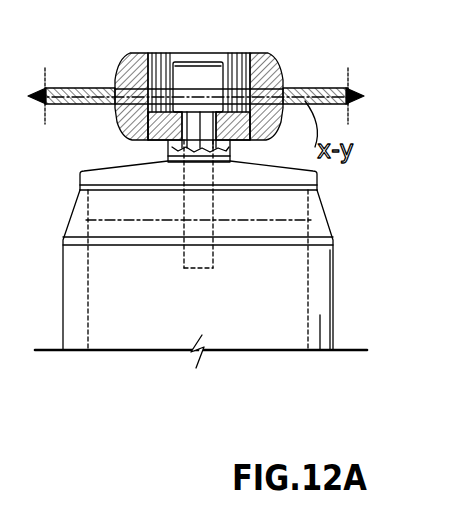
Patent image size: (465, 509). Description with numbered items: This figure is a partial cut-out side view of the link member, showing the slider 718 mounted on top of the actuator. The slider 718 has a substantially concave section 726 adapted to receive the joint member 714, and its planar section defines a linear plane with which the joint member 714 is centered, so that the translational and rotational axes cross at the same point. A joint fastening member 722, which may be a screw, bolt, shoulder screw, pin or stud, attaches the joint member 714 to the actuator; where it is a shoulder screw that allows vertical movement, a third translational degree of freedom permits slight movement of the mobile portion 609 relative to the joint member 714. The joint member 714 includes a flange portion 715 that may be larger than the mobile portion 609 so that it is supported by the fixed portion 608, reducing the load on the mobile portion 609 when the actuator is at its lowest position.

The substantially concave section 726 is at (121, 62).
The joint fastening member 722 is at (197, 78).
The joint member 714 is at (203, 58).
The slider 718 is at (278, 65).
The flange portion 715 is at (110, 167).
The fixed portion 608 is at (73, 273).
The mobile portion 609 is at (113, 313).